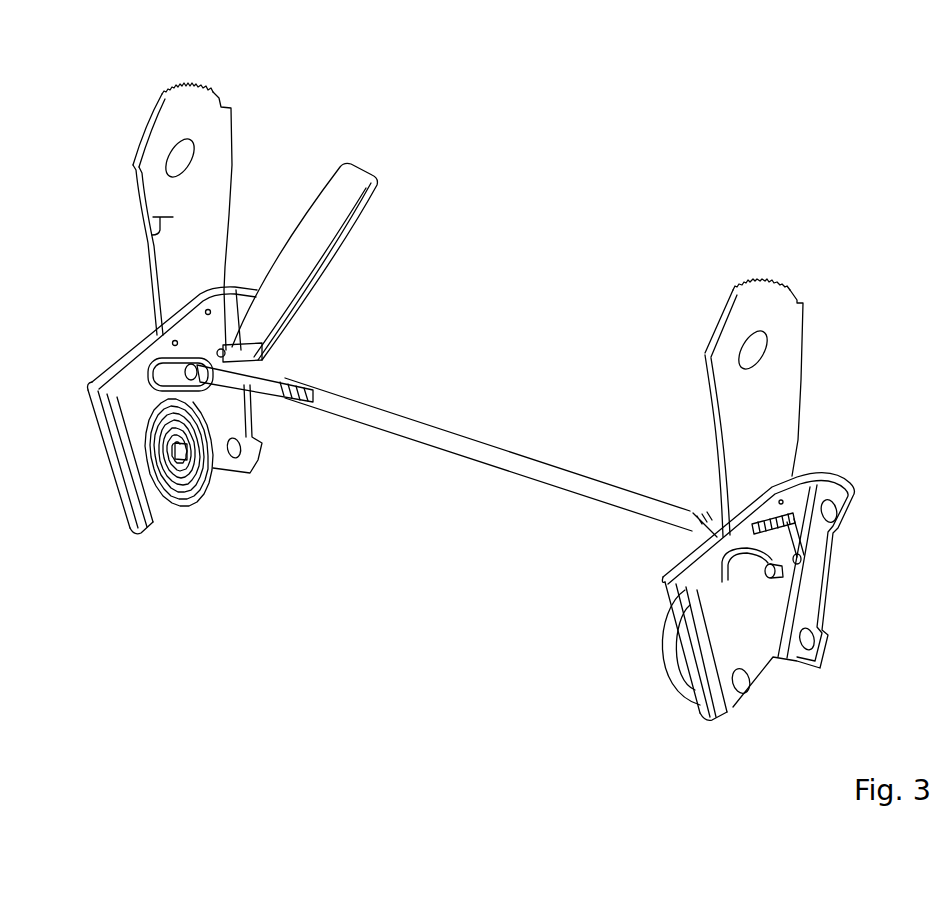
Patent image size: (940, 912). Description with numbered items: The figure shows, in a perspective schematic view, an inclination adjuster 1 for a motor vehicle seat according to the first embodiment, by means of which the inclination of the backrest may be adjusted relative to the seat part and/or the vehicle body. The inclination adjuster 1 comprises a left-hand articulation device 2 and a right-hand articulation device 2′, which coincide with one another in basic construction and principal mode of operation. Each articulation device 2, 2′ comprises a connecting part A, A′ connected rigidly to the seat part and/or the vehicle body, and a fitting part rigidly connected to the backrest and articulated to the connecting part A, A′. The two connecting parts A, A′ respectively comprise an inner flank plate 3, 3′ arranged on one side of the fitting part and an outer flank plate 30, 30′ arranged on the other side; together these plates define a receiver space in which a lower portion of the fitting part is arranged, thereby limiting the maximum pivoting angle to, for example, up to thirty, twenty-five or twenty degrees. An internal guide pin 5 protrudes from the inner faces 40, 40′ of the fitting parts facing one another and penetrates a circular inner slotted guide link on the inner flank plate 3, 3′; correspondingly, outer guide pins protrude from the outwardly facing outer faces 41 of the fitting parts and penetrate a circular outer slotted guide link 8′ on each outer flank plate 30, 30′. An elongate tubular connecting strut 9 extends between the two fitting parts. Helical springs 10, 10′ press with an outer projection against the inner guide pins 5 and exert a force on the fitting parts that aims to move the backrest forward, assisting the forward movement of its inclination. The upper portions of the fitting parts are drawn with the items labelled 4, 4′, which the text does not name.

The inclination adjuster 1 is at (581, 232).
The left-hand articulation device 2 is at (258, 234).
The right-hand articulation device 2′ is at (829, 458).
The inner flank plate 3 is at (240, 467).
The inner flank plate 3′ is at (685, 500).
The pivot arm 4 is at (215, 133).
The pivot arm 4′ is at (790, 325).
The internal guide pin 5 is at (195, 377).
The outer slotted guide link 8′ is at (741, 572).
The connecting strut 9 is at (357, 405).
The helical spring 10 is at (173, 493).
The helical spring 10′ is at (665, 651).
The outer flank plate 30 is at (112, 378).
The outer flank plate 30′ is at (737, 707).
The inner face 40 is at (152, 235).
The inner face 40′ is at (713, 323).
The outer face 41 is at (140, 122).
The connecting part A is at (130, 545).
The connecting part A′ is at (697, 740).